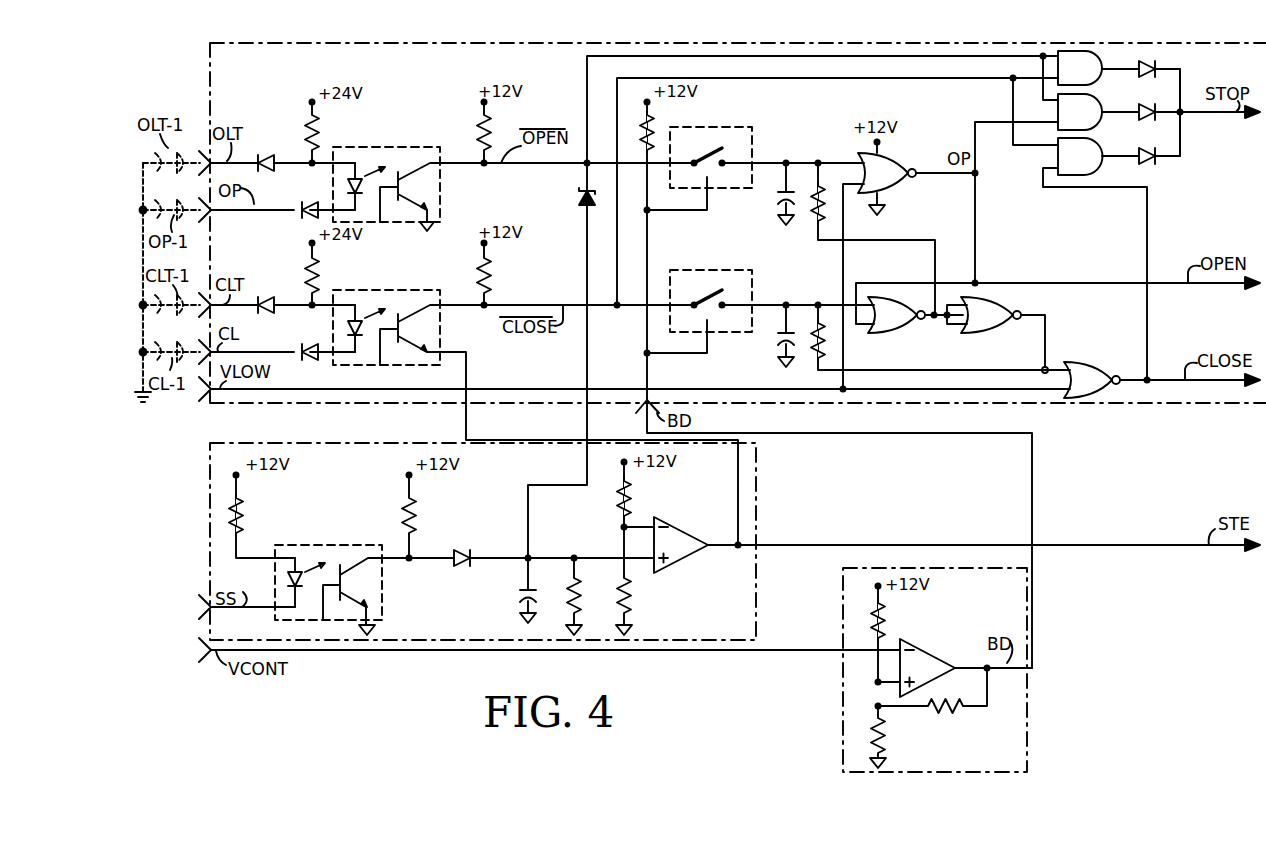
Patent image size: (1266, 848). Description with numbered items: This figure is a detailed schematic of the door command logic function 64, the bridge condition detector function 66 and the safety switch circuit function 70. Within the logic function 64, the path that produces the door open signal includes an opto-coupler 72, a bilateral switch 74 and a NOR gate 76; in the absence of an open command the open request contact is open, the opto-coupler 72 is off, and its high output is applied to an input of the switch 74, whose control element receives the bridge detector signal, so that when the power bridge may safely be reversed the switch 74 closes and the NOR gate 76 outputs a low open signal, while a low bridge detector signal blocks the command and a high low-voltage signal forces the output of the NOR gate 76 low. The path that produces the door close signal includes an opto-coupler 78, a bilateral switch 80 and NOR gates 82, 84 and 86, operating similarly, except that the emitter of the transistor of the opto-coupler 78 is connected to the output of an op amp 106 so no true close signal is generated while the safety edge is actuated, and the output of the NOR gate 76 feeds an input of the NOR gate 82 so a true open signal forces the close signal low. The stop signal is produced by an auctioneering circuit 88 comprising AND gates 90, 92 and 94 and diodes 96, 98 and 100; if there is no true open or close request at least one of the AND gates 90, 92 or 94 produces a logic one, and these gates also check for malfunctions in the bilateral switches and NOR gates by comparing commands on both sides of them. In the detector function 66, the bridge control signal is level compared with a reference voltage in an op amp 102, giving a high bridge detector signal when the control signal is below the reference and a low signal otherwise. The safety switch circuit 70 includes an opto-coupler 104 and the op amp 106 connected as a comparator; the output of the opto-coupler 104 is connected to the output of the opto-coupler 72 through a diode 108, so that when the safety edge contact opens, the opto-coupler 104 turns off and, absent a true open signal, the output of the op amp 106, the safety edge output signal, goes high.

The door command logic function 64 is at (1193, 403).
The bridge condition detector function 66 is at (1027, 700).
The safety switch circuit function 70 is at (212, 443).
The opto-coupler 72 is at (360, 147).
The bilateral switch 74 is at (733, 127).
The NOR gate 76 is at (901, 158).
The opto-coupler 78 is at (375, 290).
The bilateral switch 80 is at (710, 270).
The NOR gate 82 is at (915, 334).
The NOR gate 84 is at (1005, 334).
The NOR gate 86 is at (1085, 363).
The auctioneering circuit 88 is at (1217, 143).
The AND gate 90 is at (1095, 53).
The AND gate 92 is at (1095, 97).
The AND gate 94 is at (1095, 172).
The diode 96 is at (1160, 63).
The diode 98 is at (1153, 106).
The diode 100 is at (1162, 162).
The op amp 102 is at (928, 648).
The opto-coupler 104 is at (286, 545).
The op amp 106 is at (695, 530).
The diode 108 is at (578, 198).